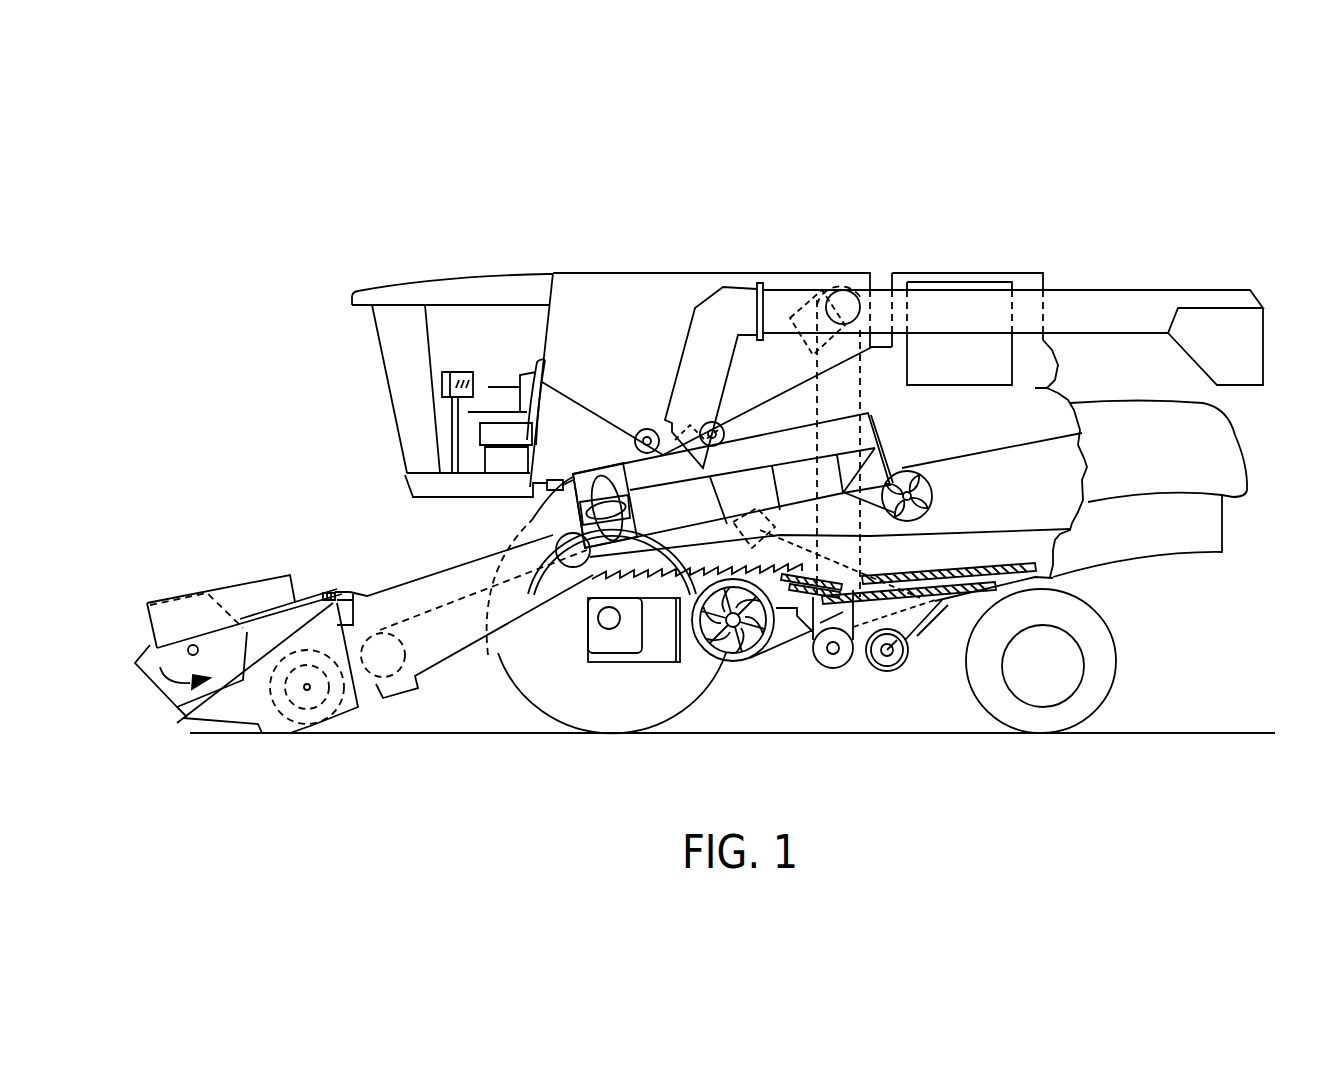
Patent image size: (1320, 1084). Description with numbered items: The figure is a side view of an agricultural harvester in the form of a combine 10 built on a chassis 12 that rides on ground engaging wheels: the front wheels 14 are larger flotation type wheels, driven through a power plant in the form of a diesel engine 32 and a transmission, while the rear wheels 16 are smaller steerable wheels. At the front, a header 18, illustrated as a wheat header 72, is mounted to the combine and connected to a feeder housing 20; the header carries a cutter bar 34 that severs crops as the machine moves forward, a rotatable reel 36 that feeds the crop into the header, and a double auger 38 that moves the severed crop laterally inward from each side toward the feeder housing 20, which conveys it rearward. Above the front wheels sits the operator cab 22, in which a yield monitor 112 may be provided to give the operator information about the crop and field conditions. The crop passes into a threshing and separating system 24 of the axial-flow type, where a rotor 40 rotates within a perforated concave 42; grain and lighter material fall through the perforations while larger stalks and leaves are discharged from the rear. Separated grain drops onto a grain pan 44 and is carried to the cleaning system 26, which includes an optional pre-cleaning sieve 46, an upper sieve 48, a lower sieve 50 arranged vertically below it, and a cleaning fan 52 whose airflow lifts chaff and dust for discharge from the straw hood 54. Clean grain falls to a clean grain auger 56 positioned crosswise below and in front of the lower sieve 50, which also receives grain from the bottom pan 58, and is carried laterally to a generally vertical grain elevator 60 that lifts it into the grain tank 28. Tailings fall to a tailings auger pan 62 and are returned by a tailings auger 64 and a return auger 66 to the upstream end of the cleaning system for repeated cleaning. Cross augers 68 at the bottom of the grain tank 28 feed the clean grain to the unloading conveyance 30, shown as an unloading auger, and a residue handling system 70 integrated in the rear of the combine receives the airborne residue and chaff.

The combine 10 is at (447, 273).
The chassis 12 is at (1052, 582).
The front wheels 14 is at (522, 695).
The rear wheels 16 is at (1112, 678).
The header 18 is at (232, 578).
The feeder housing 20 is at (420, 578).
The operator cab 22 is at (384, 372).
The threshing and separating system 24 is at (528, 518).
The cleaning system 26 is at (797, 672).
The grain tank 28 is at (590, 286).
The unloading conveyance 30 is at (1122, 300).
The diesel engine 32 is at (948, 286).
The cutter bar 34 is at (240, 733).
The rotatable reel 36 is at (145, 638).
The double auger 38 is at (306, 700).
The rotor 40 is at (598, 478).
The perforated concave 42 is at (773, 452).
The grain pan 44 is at (590, 585).
The pre-cleaning sieve 46 is at (868, 575).
The upper sieve 48 is at (958, 580).
The lower sieve 50 is at (930, 598).
The cleaning fan 52 is at (738, 650).
The straw hood 54 is at (1232, 440).
The clean grain auger 56 is at (836, 668).
The bottom pan 58 is at (955, 600).
The grain elevator 60 is at (873, 397).
The tailings auger pan 62 is at (968, 610).
The tailings auger 64 is at (887, 671).
The return auger 66 is at (805, 560).
The cross augers 68 is at (641, 430).
The residue handling system 70 is at (1207, 565).
The wheat header 72 is at (272, 548).
The yield monitor 112 is at (460, 372).